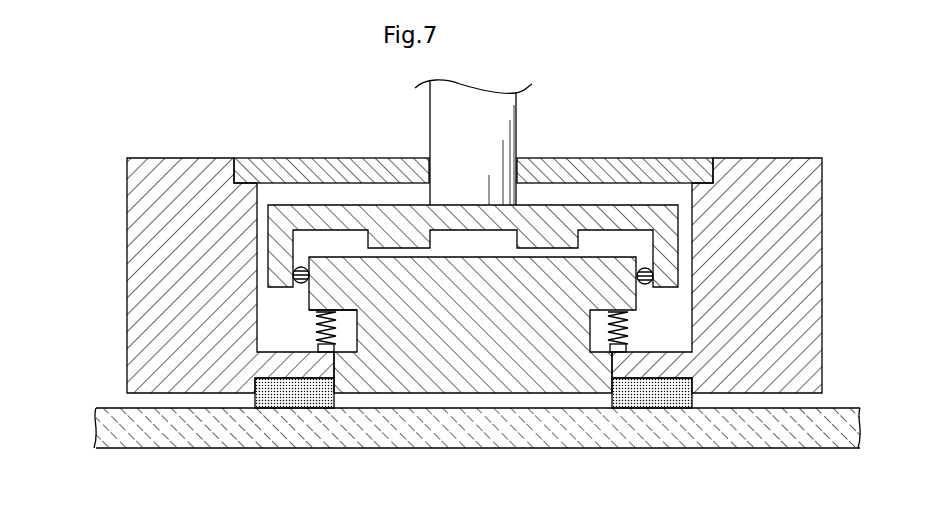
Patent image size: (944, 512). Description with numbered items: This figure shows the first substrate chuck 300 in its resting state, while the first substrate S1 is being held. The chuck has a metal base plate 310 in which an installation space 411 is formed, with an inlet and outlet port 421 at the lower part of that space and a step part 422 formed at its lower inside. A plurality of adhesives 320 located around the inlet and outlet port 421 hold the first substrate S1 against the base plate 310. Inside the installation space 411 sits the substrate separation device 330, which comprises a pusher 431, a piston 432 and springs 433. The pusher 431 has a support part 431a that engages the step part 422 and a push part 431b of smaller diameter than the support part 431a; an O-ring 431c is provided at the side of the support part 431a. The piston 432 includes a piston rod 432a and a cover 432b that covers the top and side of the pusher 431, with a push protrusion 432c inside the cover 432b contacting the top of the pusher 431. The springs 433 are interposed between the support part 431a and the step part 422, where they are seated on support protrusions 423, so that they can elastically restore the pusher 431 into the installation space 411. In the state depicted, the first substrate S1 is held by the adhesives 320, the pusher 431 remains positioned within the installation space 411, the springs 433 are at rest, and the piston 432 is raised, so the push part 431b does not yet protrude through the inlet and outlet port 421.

The first substrate chuck 300 is at (741, 139).
The base plate 310 is at (808, 210).
The adhesives 320 is at (668, 408).
The substrate separation device 330 is at (543, 195).
The installation space 411 is at (674, 193).
The inlet and outlet port 421 is at (489, 395).
The step part 422 is at (283, 345).
The support protrusions 423 is at (331, 345).
The pusher 431 is at (56, 265).
The support part 431a is at (312, 299).
The push part 431b is at (340, 326).
The O-ring 431c is at (292, 274).
The piston 432 is at (406, 106).
The piston rod 432a is at (430, 157).
The cover 432b is at (281, 249).
The push protrusion 432c is at (374, 242).
The springs 433 is at (632, 322).
The first substrate S1 is at (830, 442).